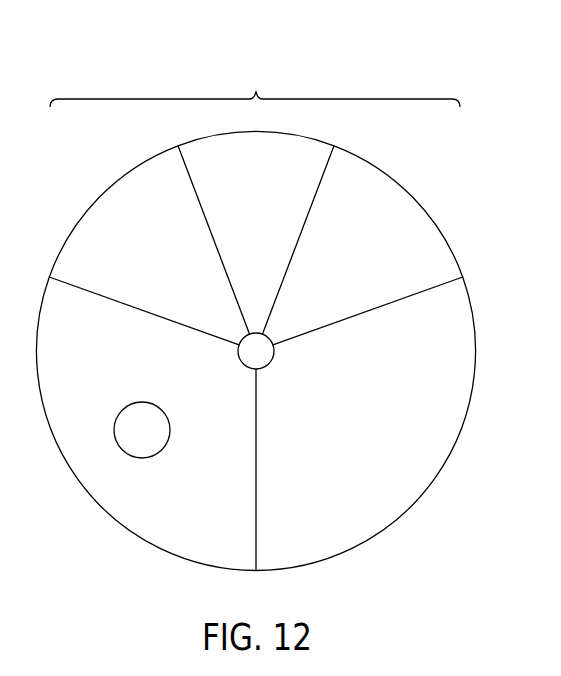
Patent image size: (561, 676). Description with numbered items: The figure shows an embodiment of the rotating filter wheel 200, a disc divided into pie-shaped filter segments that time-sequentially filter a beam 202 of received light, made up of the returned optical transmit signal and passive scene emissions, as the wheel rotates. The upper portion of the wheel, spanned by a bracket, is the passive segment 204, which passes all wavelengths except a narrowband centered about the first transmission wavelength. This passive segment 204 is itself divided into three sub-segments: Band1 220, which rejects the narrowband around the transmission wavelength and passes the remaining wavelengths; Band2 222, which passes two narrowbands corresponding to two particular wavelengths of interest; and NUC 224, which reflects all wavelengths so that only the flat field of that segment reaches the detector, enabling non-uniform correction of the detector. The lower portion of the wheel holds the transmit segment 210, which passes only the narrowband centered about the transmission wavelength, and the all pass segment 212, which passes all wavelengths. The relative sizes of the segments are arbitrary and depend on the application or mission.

The rotating filter wheel 200 is at (110, 49).
The beam of received light 202 is at (170, 430).
The passive segment 204 is at (358, 99).
The transmit segment 210 is at (137, 494).
The all pass segment 212 is at (375, 494).
The Band1 segment 220 is at (136, 211).
The Band2 segment 222 is at (288, 160).
The NUC segment 224 is at (376, 210).